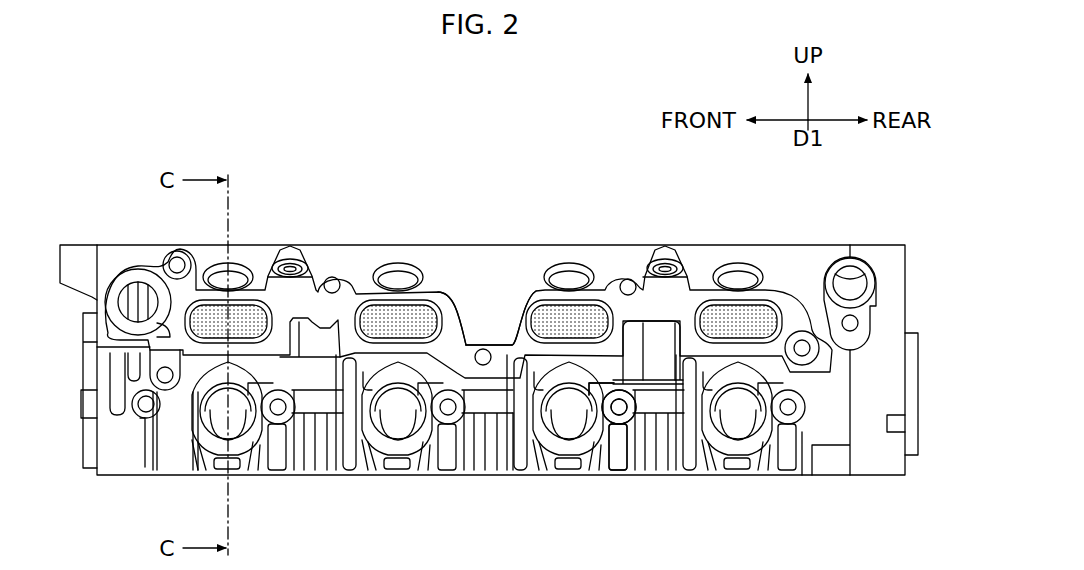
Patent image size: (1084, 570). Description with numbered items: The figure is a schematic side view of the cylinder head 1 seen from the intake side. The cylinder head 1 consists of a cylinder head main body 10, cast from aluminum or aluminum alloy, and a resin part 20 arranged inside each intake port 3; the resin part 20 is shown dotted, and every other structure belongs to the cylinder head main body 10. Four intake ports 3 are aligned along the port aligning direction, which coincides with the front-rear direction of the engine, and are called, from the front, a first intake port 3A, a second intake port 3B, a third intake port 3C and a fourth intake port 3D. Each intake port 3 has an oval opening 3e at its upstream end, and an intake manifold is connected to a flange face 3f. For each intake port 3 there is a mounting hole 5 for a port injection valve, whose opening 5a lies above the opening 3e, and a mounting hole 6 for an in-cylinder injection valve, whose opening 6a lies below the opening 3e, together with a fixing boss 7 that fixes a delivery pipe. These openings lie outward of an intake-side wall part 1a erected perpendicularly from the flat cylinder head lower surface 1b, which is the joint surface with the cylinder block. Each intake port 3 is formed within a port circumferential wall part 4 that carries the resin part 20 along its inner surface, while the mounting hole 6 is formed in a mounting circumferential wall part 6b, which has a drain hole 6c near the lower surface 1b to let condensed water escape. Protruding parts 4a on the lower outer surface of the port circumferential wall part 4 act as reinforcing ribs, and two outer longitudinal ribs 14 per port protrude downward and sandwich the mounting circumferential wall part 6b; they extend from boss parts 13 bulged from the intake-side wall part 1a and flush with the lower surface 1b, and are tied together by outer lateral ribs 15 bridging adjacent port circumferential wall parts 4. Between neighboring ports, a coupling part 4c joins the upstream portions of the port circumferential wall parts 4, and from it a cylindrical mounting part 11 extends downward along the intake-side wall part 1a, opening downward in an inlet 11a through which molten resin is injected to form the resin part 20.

The cylinder head 1 is at (120, 193).
The intake-side wall part 1a is at (485, 467).
The cylinder head lower surface 1b is at (512, 470).
The intake port 3 is at (496, 252).
The first intake port 3A is at (258, 297).
The second intake port 3B is at (398, 298).
The third intake port 3C is at (569, 298).
The fourth intake port 3D is at (748, 297).
The opening 3e is at (440, 292).
The flange face 3f is at (521, 297).
The port circumferential wall part 4 is at (272, 360).
The protruding part 4a is at (545, 345).
The coupling part 4c is at (330, 300).
The mounting hole 5 is at (566, 268).
The opening 5a is at (374, 268).
The mounting hole 6 is at (392, 437).
The opening 6a is at (409, 440).
The mounting circumferential wall part 6b is at (375, 453).
The drain hole 6c is at (562, 462).
The fixing boss 7 is at (607, 445).
The cylinder head main body 10 is at (842, 480).
The mounting part 11 is at (665, 340).
The inlet 11a is at (658, 385).
The boss part 13 is at (705, 462).
The outer longitudinal rib 14 is at (190, 400).
The outer lateral rib 15 is at (313, 410).
The resin part 20 is at (197, 340).